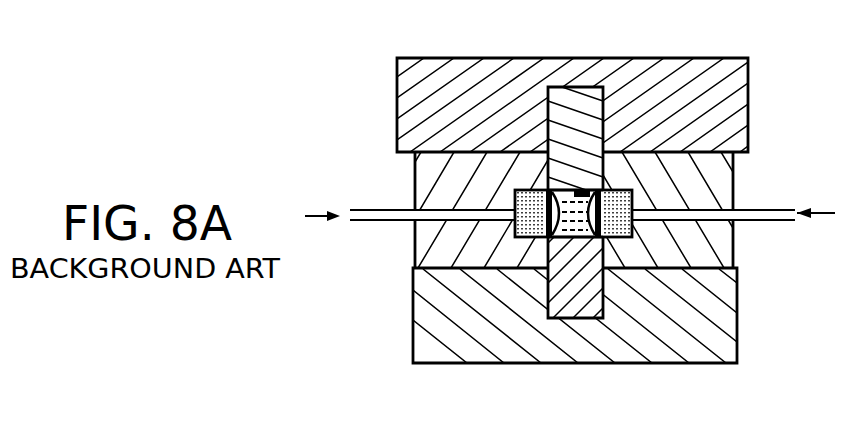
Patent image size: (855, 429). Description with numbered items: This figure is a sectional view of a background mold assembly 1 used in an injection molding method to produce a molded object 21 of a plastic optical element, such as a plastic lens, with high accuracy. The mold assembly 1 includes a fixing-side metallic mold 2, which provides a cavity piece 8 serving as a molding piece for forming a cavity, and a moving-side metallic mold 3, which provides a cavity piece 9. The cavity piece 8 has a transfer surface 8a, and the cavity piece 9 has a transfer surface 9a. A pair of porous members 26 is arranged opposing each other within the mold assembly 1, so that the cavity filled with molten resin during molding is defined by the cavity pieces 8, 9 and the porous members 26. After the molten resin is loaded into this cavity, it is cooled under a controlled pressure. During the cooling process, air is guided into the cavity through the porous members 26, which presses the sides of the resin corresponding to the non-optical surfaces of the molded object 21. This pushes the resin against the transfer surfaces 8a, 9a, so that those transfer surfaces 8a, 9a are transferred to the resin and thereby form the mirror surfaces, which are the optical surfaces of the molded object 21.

The mold assembly 1 is at (397, 57).
The fixing-side metallic mold 2 is at (410, 110).
The moving-side metallic mold 3 is at (447, 331).
The cavity piece 8 is at (566, 92).
The transfer surface 8a is at (565, 190).
The cavity piece 9 is at (596, 306).
The transfer surface 9a is at (572, 238).
The molded object 21 is at (600, 238).
The porous members 26 is at (527, 206).